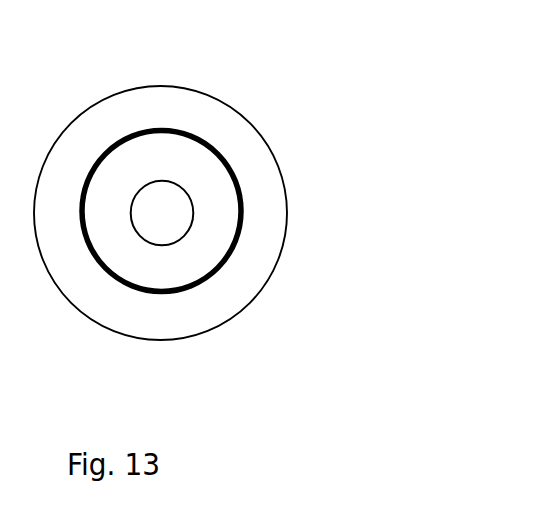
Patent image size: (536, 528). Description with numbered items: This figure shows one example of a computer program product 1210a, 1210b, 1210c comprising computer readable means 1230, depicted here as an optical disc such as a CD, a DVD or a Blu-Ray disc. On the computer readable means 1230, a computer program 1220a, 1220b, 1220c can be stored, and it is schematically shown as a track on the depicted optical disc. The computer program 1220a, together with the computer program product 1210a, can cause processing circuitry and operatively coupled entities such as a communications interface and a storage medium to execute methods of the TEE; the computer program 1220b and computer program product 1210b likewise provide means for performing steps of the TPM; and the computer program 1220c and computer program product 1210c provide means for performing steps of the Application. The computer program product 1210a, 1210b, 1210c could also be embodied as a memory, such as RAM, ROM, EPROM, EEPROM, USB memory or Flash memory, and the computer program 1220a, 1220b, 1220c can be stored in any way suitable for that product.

The computer program product 1210a is at (228, 174).
The computer program product 1210b is at (228, 174).
The computer program product 1210c is at (228, 174).
The computer program 1220a is at (252, 211).
The computer program 1220b is at (252, 211).
The computer program 1220c is at (242, 232).
The computer readable means 1230 is at (205, 320).